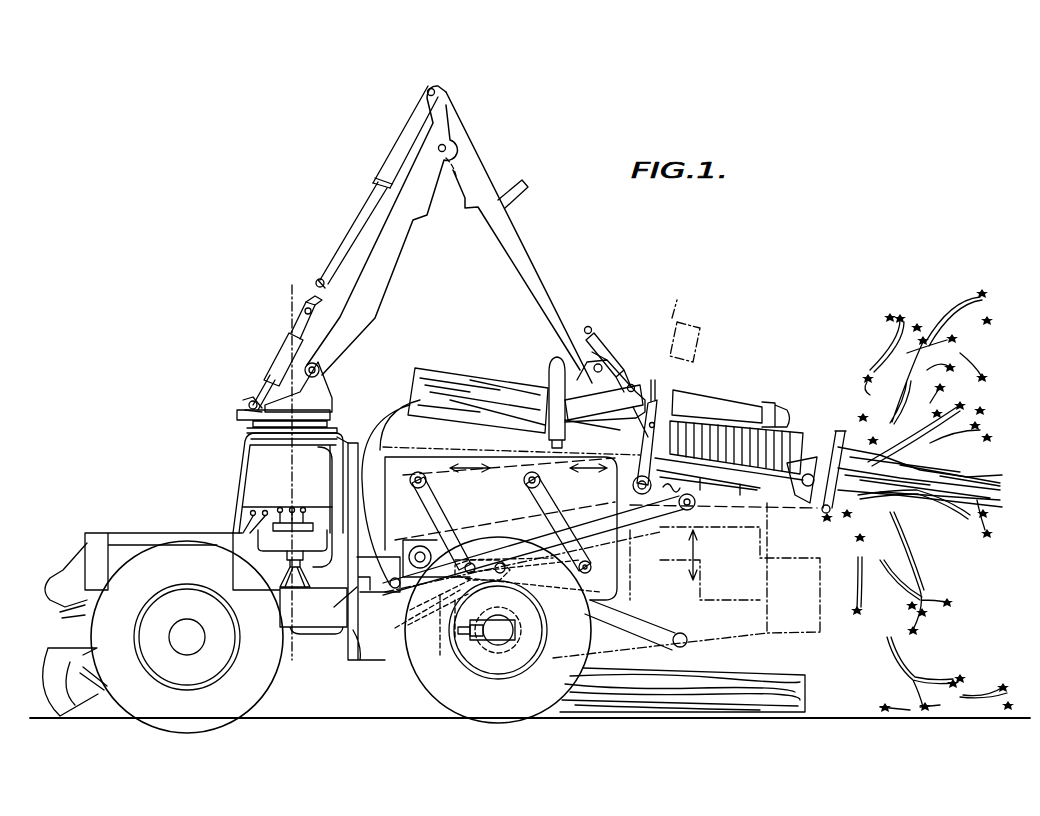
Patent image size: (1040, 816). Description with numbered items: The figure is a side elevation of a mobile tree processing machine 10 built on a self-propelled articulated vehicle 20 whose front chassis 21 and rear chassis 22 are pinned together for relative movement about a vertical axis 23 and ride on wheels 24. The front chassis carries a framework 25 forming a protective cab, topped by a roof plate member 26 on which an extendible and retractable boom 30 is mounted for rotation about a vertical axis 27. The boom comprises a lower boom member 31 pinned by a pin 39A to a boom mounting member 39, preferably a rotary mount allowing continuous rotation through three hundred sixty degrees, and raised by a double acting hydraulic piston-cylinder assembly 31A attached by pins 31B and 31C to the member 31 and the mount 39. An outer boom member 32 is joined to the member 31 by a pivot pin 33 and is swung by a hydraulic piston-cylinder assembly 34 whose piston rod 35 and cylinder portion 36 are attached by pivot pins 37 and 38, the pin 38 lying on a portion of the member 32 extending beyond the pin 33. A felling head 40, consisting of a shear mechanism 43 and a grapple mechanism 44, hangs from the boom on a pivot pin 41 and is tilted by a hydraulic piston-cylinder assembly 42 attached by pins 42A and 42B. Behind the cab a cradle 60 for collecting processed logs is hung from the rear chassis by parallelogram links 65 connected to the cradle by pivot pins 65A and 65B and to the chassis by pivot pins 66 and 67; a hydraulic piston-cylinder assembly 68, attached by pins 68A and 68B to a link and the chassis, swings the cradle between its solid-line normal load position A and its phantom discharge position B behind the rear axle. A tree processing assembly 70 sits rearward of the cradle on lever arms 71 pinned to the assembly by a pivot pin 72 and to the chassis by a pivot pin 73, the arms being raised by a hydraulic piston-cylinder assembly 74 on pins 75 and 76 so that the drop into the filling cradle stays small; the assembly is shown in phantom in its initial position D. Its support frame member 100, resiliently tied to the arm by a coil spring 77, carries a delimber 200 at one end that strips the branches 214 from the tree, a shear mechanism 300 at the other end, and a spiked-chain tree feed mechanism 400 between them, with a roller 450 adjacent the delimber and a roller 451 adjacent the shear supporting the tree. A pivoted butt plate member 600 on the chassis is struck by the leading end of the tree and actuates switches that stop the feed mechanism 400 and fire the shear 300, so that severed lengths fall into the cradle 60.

The processing machine 10 is at (350, 440).
The vehicle 20 is at (323, 660).
The front chassis 21 is at (292, 655).
The rear chassis 22 is at (483, 675).
The vertical axis 23 is at (425, 540).
The wheels 24 is at (138, 684).
The framework 25 is at (243, 490).
The roof or plate member 26 is at (339, 428).
The vertical axis 27 is at (282, 328).
The extendible and retractable boom 30 is at (397, 252).
The boom member 31 is at (403, 222).
The double acting hydraulic piston-cylinder assembly 31A is at (270, 358).
The pin 31B is at (300, 303).
The pin 31C is at (250, 410).
The boom member 32 is at (533, 254).
The pivot pin 33 is at (447, 145).
The hydraulic piston-cylinder assembly 34 is at (380, 167).
The piston rod 35 is at (360, 207).
The cylinder portion 36 is at (412, 128).
The pivot pin 37 is at (316, 280).
The pivot pin 38 is at (436, 94).
The boom mounting member 39 is at (298, 392).
The pin 39A is at (320, 367).
The felling head 40 is at (529, 366).
The pivot pin 41 is at (603, 348).
The hydraulic piston-cylinder assembly 42 is at (630, 383).
The pin 42A is at (590, 326).
The pin 42B is at (660, 352).
The shear mechanism 43 is at (548, 377).
The grapple mechanism 44 is at (587, 430).
The cradle 60 is at (380, 469).
The links 65 is at (445, 518).
The pivot pin 65A is at (420, 472).
The pivot pin 65B is at (526, 476).
The pivot pin 66 is at (480, 662).
The pivot pin 67 is at (589, 563).
The hydraulic piston-cylinder assembly 68 is at (548, 575).
The pin 68A is at (560, 565).
The pin 68B is at (504, 520).
The tree processing assembly 70 is at (787, 398).
The lever arms 71 is at (628, 522).
The pivot pin 72 is at (695, 507).
The pivot pin 73 is at (424, 546).
The hydraulic piston-cylinder assembly 74 is at (420, 652).
The pin 75 is at (455, 645).
The pivot pin 76 is at (397, 652).
The coil spring 77 is at (634, 489).
The support frame member 100 is at (775, 502).
The delimber 200 is at (907, 450).
The branches 214 is at (882, 514).
The shear mechanism 300 is at (660, 416).
The tree feed mechanism 400 is at (802, 426).
The roller 450 is at (840, 430).
The roller 451 is at (706, 426).
The butt plate member 600 is at (398, 412).
The normal load position A is at (334, 602).
The discharge position B is at (601, 552).
The initial position D is at (605, 387).